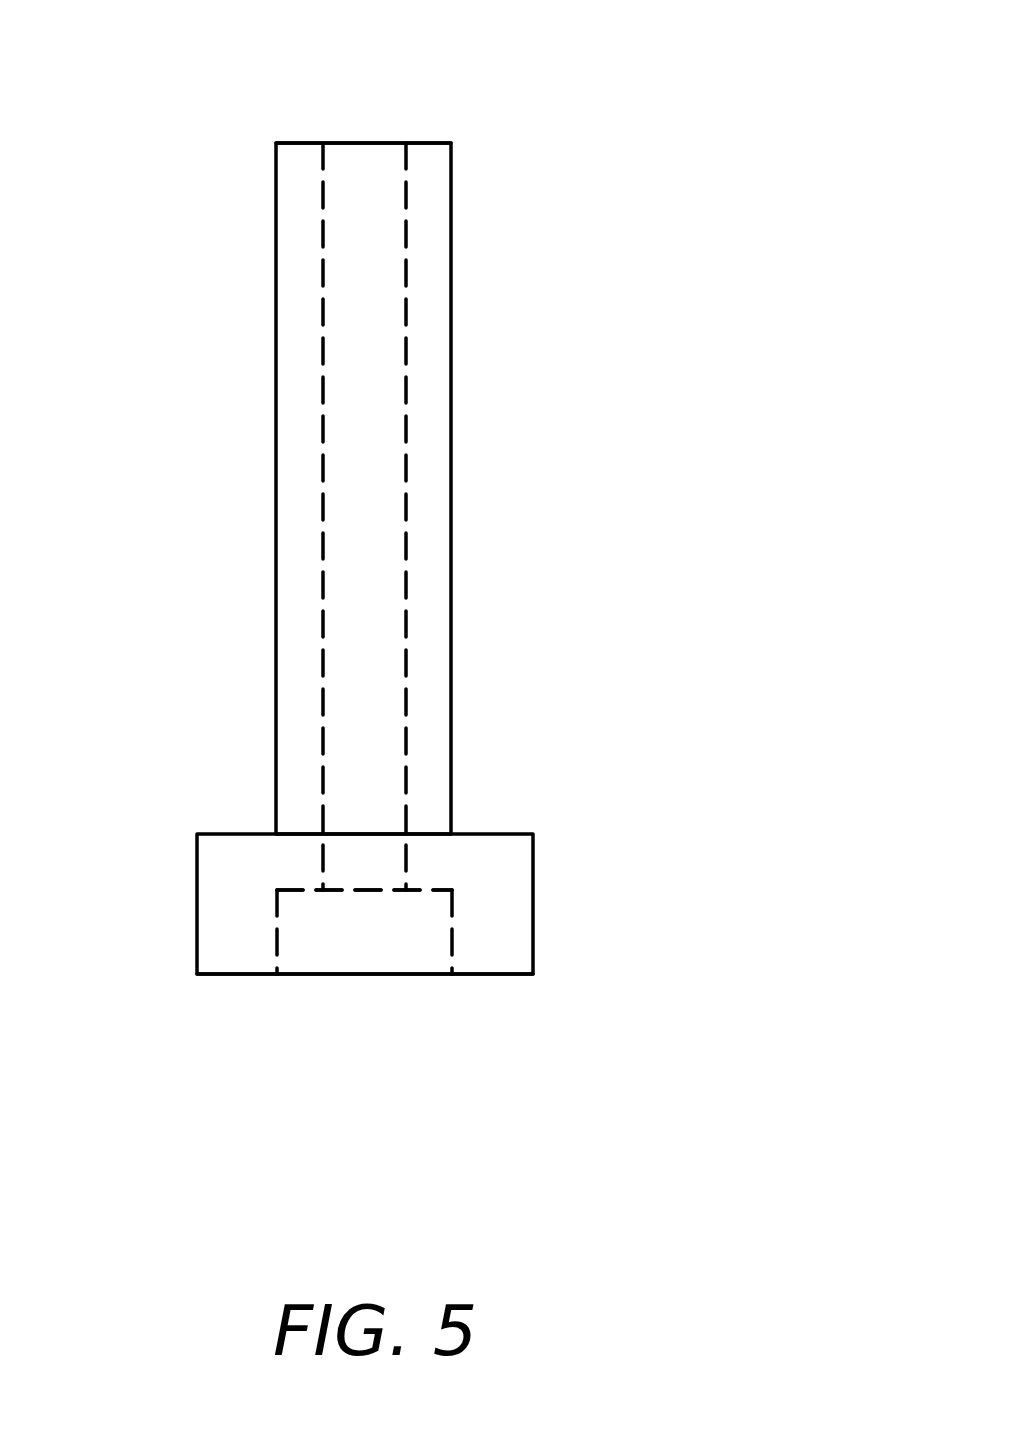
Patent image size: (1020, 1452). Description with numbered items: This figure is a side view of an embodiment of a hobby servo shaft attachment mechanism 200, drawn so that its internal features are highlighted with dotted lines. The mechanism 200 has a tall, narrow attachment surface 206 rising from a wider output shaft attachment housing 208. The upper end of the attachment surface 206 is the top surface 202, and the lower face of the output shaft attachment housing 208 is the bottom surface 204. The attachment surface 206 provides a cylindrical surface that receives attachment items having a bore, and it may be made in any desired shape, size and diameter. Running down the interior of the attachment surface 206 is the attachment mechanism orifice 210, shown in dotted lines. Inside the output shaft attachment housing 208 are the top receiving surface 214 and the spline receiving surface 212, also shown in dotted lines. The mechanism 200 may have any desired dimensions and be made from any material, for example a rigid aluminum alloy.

The hobby servo shaft attachment mechanism 200 is at (280, 1072).
The top surface 202 is at (372, 143).
The bottom surface 204 is at (490, 974).
The attachment surface 206 is at (432, 576).
The output shaft attachment housing 208 is at (507, 882).
The attachment mechanism orifice 210 is at (375, 358).
The spline receiving surface 212 is at (410, 910).
The top receiving surface 214 is at (290, 888).